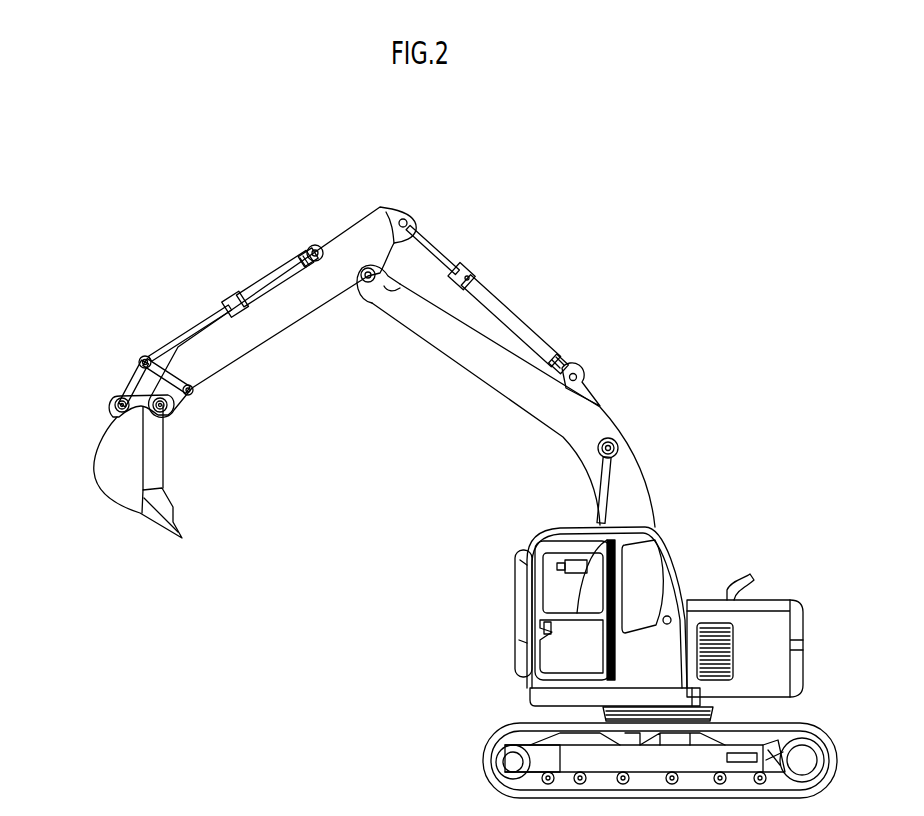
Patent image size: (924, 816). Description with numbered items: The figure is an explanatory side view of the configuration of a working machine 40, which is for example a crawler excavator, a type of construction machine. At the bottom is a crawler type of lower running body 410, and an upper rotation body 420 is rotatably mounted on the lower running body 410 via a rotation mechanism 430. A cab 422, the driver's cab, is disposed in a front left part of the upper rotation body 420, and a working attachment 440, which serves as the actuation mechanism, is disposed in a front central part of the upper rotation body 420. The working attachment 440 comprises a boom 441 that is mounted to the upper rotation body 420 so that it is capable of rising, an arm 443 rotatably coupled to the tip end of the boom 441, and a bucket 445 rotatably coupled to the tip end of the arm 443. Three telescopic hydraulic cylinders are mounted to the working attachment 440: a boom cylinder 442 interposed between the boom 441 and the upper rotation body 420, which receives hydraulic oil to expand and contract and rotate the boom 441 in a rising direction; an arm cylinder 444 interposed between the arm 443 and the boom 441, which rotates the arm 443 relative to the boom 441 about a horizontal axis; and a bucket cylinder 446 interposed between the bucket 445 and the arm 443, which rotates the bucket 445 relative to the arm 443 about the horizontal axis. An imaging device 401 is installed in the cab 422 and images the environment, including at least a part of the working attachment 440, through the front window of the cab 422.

The working machine 40 is at (773, 352).
The imaging device 401 is at (580, 558).
The lower running body 410 is at (834, 742).
The upper rotation body 420 is at (813, 641).
The cab 422 is at (725, 535).
The rotation mechanism 430 is at (752, 722).
The working attachment 440 is at (445, 211).
The boom 441 is at (640, 478).
The boom cylinder 442 is at (600, 507).
The arm 443 is at (277, 337).
The arm cylinder 444 is at (510, 313).
The bucket 445 is at (97, 462).
The bucket cylinder 446 is at (237, 294).